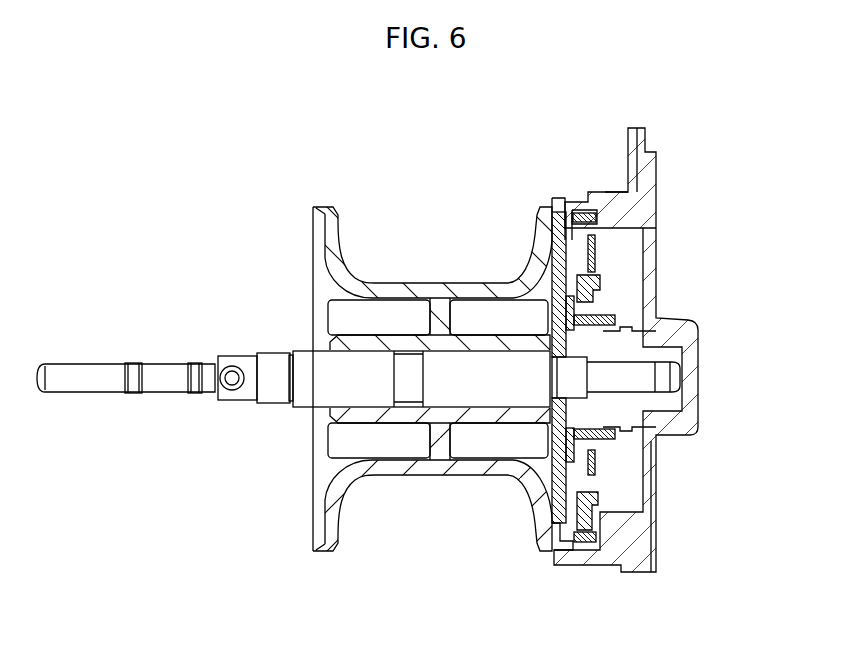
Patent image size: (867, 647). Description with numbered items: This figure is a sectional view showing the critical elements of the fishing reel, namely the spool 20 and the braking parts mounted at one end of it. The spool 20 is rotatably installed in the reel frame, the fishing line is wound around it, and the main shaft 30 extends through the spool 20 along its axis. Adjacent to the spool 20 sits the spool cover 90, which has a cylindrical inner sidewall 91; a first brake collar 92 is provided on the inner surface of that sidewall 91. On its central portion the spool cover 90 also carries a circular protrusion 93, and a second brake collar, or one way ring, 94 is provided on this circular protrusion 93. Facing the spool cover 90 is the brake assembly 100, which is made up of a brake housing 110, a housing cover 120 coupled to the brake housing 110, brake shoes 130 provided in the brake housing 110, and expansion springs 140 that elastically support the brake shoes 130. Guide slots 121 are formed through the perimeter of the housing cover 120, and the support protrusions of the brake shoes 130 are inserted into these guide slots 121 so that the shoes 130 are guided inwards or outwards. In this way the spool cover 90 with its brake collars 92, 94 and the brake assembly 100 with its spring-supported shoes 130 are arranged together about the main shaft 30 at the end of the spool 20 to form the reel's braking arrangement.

The spool 20 is at (389, 292).
The main shaft 30 is at (455, 382).
The spool cover 90 is at (690, 402).
The cylindrical inner sidewall 91 is at (592, 201).
The first brake collar 92 is at (597, 217).
The circular protrusion 93 is at (607, 307).
The second brake collar or one way ring 94 is at (605, 331).
The brake assembly 100 is at (544, 313).
The brake housing 110 is at (553, 462).
The housing cover 120 is at (598, 462).
The guide slots 121 is at (600, 490).
The brake shoes 130 is at (598, 540).
The expansion springs 140 is at (556, 198).